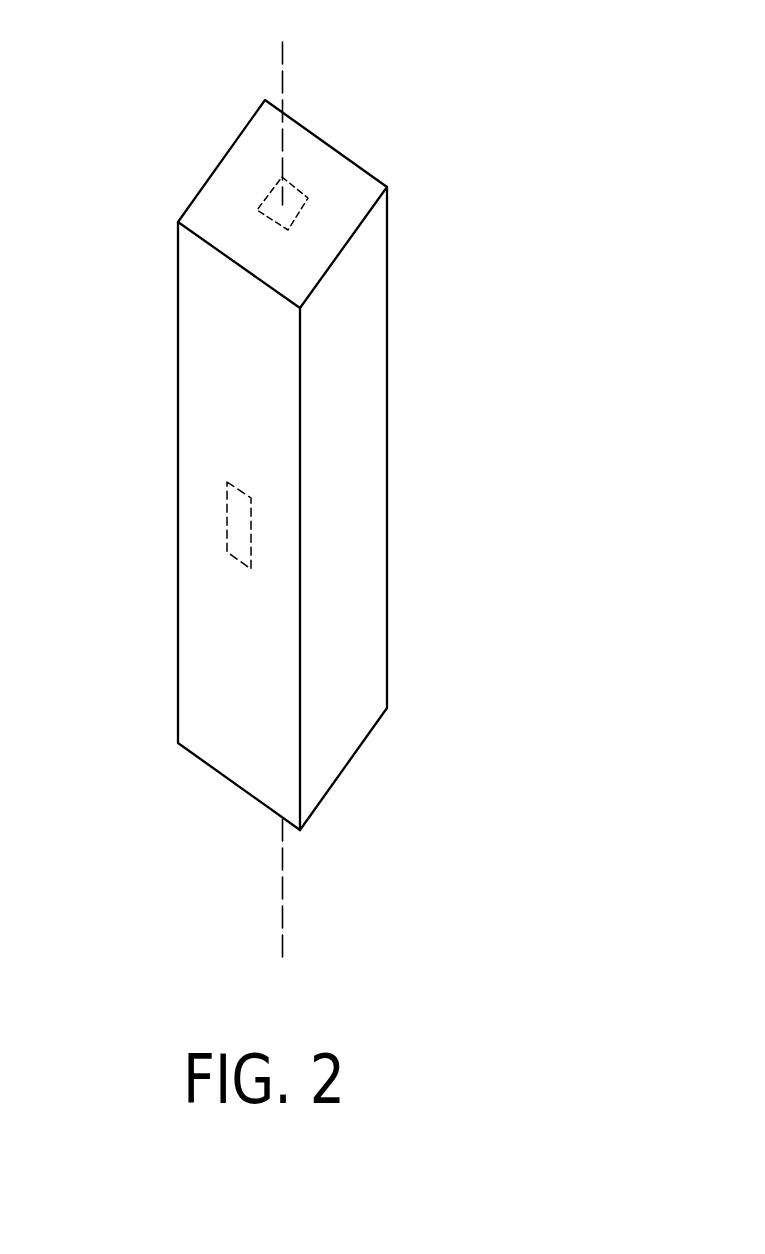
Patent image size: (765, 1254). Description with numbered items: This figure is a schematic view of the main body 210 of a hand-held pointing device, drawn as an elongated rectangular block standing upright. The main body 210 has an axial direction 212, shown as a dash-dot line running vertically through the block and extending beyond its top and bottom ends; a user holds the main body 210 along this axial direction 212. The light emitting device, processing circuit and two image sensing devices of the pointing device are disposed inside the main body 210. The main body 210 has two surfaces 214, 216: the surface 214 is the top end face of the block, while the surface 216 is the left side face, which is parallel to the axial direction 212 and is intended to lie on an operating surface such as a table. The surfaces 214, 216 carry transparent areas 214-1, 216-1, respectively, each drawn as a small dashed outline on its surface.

The main body 210 is at (356, 496).
The axial direction 212 is at (282, 52).
The surface 214 is at (353, 190).
The transparent area 214-1 is at (298, 193).
The surface 216 is at (192, 353).
The transparent area 216-1 is at (227, 537).